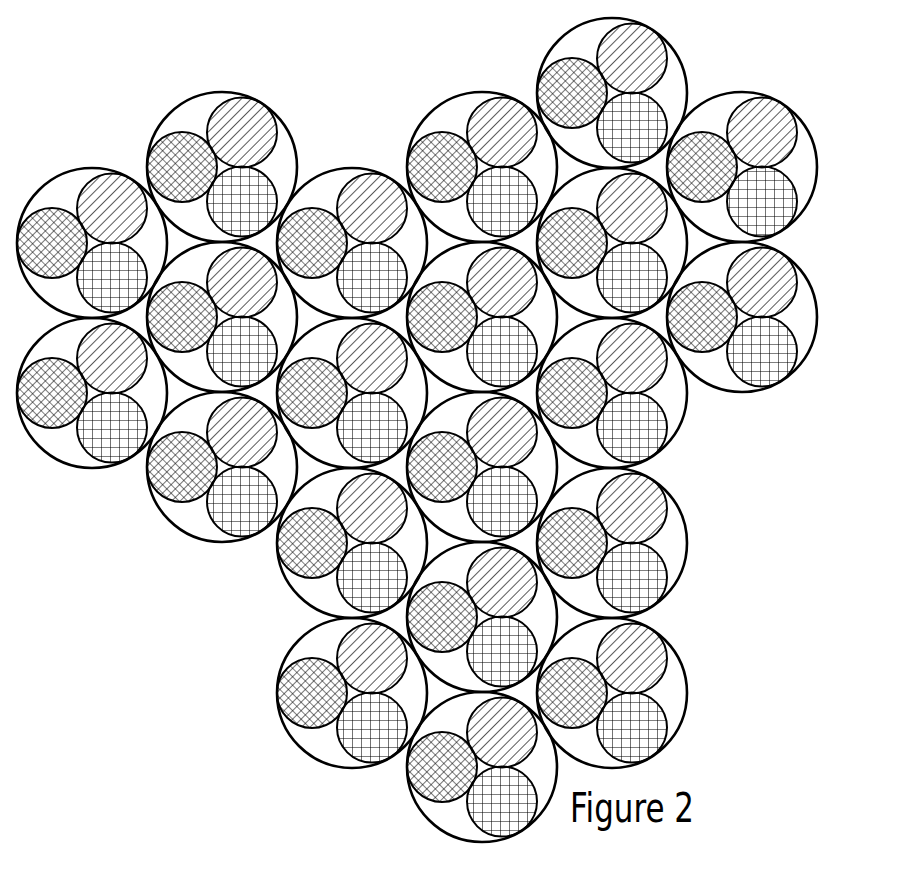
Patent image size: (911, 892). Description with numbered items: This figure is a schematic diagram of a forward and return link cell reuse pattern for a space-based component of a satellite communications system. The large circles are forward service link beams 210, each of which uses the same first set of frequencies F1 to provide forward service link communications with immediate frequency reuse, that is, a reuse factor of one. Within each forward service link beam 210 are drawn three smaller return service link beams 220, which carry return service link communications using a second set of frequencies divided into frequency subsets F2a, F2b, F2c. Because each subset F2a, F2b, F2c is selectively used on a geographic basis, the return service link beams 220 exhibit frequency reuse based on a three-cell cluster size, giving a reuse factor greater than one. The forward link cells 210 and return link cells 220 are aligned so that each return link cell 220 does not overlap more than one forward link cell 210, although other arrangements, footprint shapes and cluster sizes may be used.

The first set of frequencies F1 is at (778, 155).
The frequency subset of the second set of frequencies F2a is at (767, 131).
The frequency subset of the second set of frequencies F2b is at (702, 157).
The frequency subset of the second set of frequencies F2c is at (763, 203).
The forward service link beam 210 is at (817, 157).
The return service link beam 220 is at (797, 200).